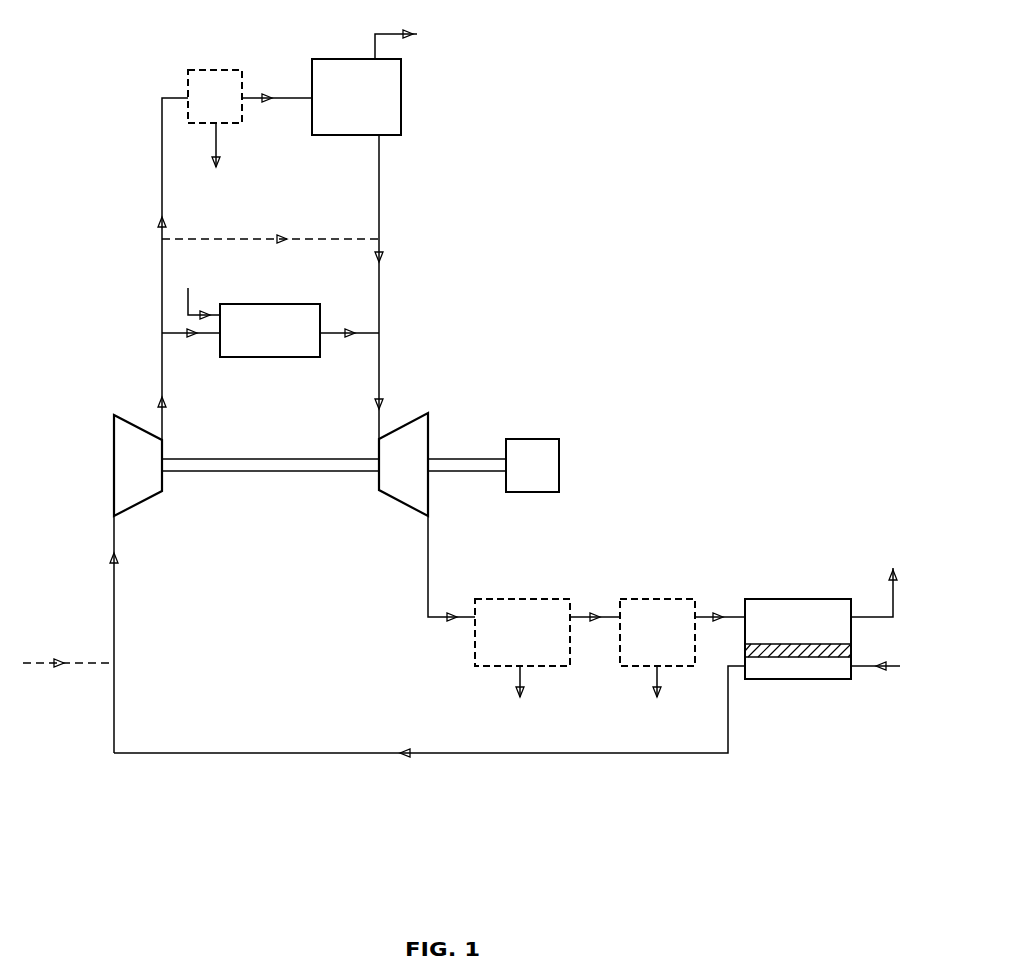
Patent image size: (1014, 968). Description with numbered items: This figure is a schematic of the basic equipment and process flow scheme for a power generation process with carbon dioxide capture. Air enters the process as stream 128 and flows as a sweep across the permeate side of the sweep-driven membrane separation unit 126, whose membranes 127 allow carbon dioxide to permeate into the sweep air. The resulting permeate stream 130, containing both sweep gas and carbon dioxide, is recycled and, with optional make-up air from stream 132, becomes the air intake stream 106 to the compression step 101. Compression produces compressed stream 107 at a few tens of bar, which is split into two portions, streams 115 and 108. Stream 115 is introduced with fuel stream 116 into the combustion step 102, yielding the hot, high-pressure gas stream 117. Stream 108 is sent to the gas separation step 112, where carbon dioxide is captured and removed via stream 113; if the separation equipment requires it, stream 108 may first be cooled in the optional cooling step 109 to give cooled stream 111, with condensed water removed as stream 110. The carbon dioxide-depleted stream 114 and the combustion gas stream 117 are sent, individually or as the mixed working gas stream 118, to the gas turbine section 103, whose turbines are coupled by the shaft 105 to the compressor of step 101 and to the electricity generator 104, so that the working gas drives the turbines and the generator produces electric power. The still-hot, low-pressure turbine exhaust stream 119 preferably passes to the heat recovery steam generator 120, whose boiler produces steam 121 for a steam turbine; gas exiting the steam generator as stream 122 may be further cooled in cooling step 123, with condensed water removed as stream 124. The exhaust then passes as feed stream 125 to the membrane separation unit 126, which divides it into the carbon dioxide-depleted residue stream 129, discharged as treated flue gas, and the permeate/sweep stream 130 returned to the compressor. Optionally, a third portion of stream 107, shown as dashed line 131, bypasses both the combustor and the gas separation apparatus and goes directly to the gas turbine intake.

The compression step 101 is at (113, 455).
The combustion step or zone 102 is at (264, 357).
The gas turbine section 103 is at (428, 413).
The electricity generator 104 is at (540, 438).
The shaft 105 is at (473, 458).
The air intake stream 106 is at (134, 634).
The compressed stream 107 is at (181, 386).
The compressed air portion to gas separation 108 is at (155, 215).
The optional cooling step 109 is at (218, 70).
The condensed water stream 110 is at (217, 161).
The cooled stream 111 is at (277, 85).
The gas separation step 112 is at (337, 59).
The carbon dioxide removal stream 113 is at (415, 41).
The carbon dioxide-depleted stream 114 is at (399, 234).
The compressed air portion to combustion 115 is at (191, 345).
The fuel stream 116 is at (197, 292).
The hot high-pressure gas stream 117 is at (349, 345).
The mixed working gas stream 118 is at (362, 386).
The turbine exhaust gas stream 119 is at (451, 582).
The heat recovery steam generator 120 is at (530, 599).
The steam 121 is at (518, 698).
The steam generator exit gas stream 122 is at (595, 606).
The cooling step 123 is at (664, 599).
The condensed water stream 124 is at (658, 698).
The feed stream 125 is at (720, 606).
The sweep-driven membrane separation unit 126 is at (788, 599).
The membranes 127 is at (852, 645).
The air sweep stream 128 is at (875, 679).
The residue stream 129 is at (882, 580).
The permeate stream 130 is at (429, 711).
The bypass stream 131 is at (270, 226).
The make-up air stream 132 is at (68, 677).